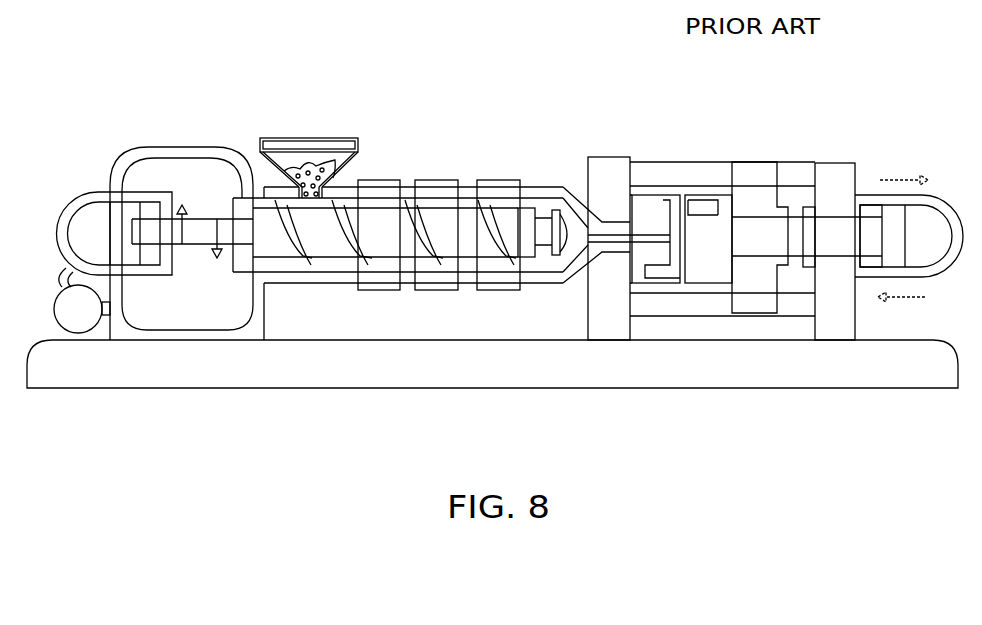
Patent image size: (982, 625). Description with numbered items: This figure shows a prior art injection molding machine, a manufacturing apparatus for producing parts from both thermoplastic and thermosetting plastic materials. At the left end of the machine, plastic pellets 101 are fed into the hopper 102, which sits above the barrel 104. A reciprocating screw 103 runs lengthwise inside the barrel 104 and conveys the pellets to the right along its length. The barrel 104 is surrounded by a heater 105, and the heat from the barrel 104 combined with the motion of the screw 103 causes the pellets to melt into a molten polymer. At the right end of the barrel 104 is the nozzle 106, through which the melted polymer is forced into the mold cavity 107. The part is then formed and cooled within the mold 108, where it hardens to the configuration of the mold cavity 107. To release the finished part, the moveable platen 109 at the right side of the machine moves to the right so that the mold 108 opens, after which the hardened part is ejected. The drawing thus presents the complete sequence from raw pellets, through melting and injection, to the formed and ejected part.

The plastic pellets 101 is at (292, 152).
The hopper 102 is at (335, 132).
The reciprocating screw 103 is at (317, 230).
The barrel 104 is at (335, 278).
The heater 105 is at (485, 174).
The nozzle 106 is at (608, 250).
The mold cavity 107 is at (674, 238).
The mold 108 is at (703, 250).
The moveable platen 109 is at (744, 232).